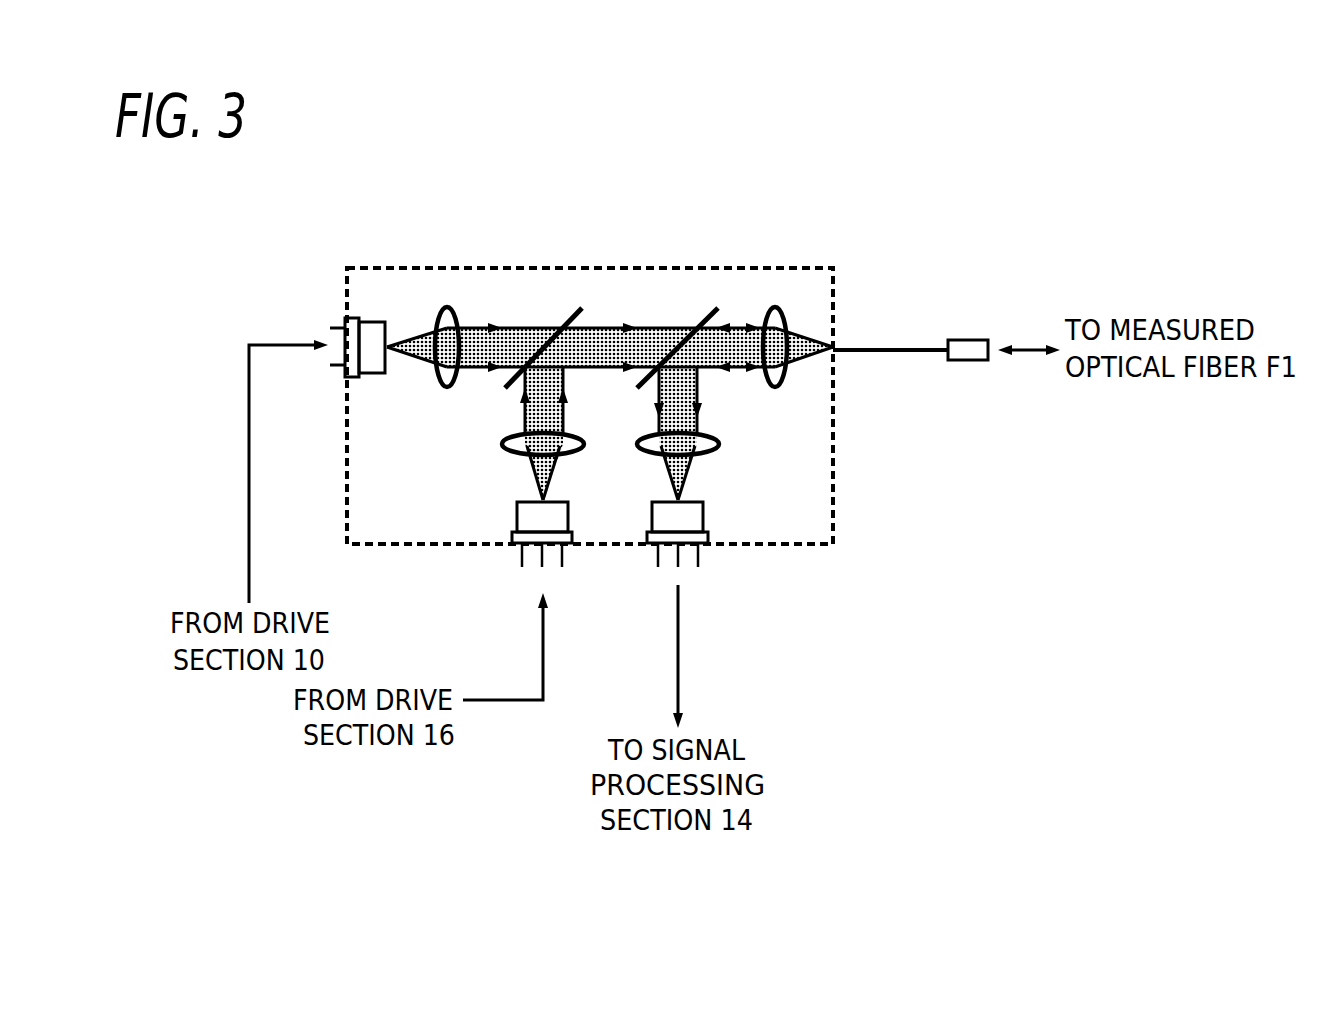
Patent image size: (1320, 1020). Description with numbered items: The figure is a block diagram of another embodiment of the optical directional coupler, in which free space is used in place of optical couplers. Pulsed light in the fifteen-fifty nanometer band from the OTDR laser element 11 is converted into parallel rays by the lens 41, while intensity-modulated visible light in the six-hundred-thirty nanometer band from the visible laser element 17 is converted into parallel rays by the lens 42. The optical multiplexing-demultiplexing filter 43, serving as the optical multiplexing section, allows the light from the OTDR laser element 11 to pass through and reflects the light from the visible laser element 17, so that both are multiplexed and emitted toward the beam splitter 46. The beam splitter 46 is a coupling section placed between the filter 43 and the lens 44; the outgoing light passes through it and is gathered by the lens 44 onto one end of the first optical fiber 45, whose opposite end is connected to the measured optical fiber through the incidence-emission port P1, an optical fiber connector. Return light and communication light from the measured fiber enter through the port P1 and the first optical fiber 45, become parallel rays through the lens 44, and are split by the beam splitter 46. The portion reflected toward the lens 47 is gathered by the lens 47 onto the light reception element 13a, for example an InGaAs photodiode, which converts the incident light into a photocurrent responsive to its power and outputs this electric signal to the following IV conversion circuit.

The OTDR laser element 11 is at (370, 320).
The lens 41 is at (447, 307).
The optical multiplexing-demultiplexing filter 43 is at (582, 308).
The beam splitter 46 is at (718, 308).
The lens 44 is at (775, 308).
The first optical fiber 45 is at (897, 348).
The incidence-emission port P1 is at (972, 340).
The lens 42 is at (502, 444).
The lens 47 is at (720, 446).
The visible laser element 17 is at (518, 524).
The light reception element 13a is at (702, 527).